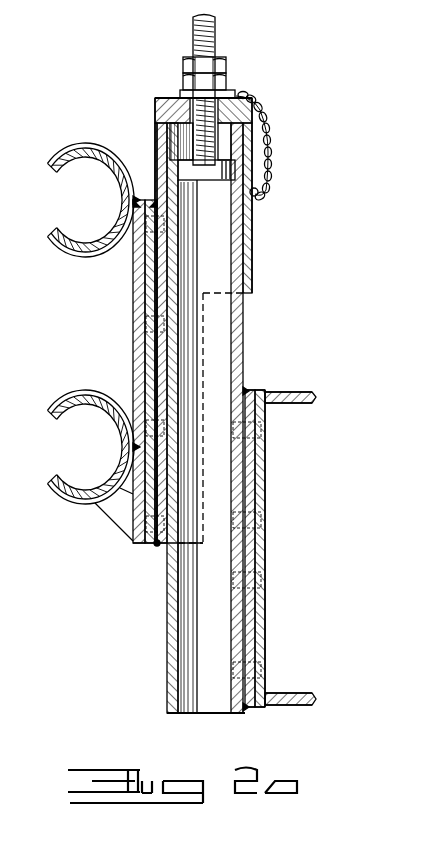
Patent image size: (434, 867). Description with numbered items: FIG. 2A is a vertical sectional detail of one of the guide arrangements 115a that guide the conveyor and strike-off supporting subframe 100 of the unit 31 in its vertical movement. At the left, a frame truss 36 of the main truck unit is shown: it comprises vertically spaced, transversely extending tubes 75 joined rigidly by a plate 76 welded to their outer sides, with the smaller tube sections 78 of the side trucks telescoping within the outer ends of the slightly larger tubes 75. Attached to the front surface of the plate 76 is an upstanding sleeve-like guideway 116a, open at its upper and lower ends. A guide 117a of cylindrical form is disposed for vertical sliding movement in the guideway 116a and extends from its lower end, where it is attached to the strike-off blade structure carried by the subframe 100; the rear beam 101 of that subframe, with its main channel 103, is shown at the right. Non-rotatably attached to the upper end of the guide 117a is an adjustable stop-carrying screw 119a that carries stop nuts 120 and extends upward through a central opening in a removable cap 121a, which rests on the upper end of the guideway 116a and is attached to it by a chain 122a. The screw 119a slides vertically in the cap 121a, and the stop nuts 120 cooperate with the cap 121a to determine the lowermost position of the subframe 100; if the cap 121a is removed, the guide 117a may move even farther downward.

The adjustable stop-carrying screw 119a is at (193, 30).
The stop nuts 120 is at (183, 80).
The removable cap 121a is at (180, 94).
The chain 122a is at (271, 152).
The sleeve-like guideway 116a is at (252, 282).
The guide arrangement 115a is at (167, 657).
The guide 117a is at (168, 582).
The tubes 75 is at (94, 342).
The tube sections 78 is at (113, 217).
The plate 76 is at (133, 316).
The frame truss 36 is at (51, 506).
The subframe 100 is at (295, 552).
The rear beam 101 is at (302, 404).
The main channel 103 is at (312, 693).
The outrider unit 31 is at (305, 710).